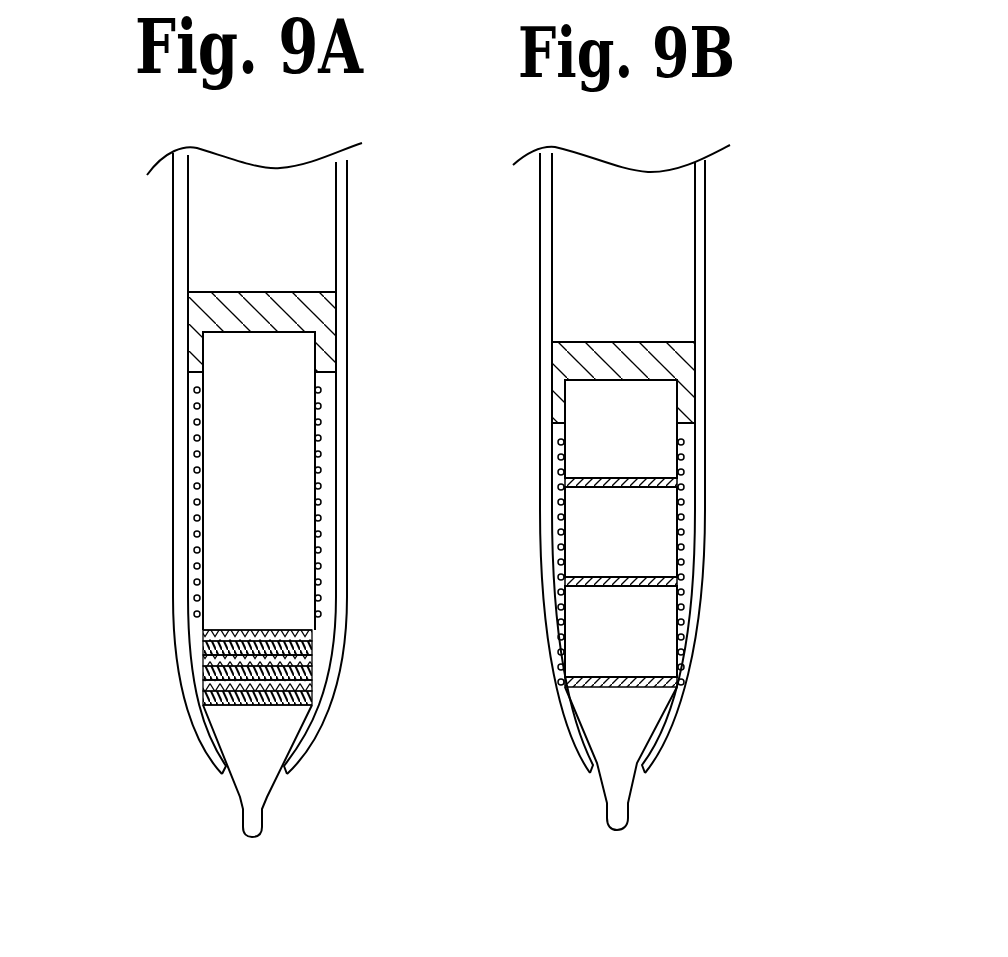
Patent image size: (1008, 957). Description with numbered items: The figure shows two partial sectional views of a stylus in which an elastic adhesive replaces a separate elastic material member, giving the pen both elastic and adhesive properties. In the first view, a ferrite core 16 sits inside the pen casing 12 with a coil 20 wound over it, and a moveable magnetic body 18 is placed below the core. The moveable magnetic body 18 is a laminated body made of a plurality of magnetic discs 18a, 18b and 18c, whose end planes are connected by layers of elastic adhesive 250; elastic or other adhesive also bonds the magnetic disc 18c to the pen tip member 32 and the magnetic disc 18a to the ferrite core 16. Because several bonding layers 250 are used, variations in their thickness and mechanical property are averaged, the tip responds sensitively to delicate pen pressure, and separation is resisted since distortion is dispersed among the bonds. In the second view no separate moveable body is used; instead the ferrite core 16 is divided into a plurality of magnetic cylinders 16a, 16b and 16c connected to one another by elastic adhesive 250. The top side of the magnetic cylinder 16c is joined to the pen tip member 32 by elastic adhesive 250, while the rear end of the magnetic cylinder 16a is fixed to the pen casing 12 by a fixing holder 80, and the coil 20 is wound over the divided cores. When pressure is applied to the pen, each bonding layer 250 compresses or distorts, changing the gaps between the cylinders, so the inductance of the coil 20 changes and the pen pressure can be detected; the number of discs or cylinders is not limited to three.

In FIG. 9A, the pen casing 12 is at (343, 233).
In FIG. 9B, the pen casing 12 is at (707, 222).
In FIG. 9A, the fixing holder 80 is at (312, 313).
In FIG. 9B, the fixing holder 80 is at (680, 360).
In FIG. 9A, the coil 20 is at (319, 418).
In FIG. 9B, the coil 20 is at (563, 442).
In FIG. 9A, the ferrite core 16 is at (275, 488).
In FIG. 9B, the ferrite core 16 is at (732, 528).
In FIG. 9B, the magnetic cylinder 16a is at (647, 443).
In FIG. 9B, the magnetic cylinder 16b is at (650, 537).
In FIG. 9B, the magnetic cylinder 16c is at (687, 631).
In FIG. 9A, the moveable magnetic body 18 is at (352, 673).
In FIG. 9A, the magnetic disc 18a is at (310, 643).
In FIG. 9A, the magnetic disc 18b is at (310, 662).
In FIG. 9A, the magnetic disc 18c is at (310, 688).
In FIG. 9A, the elastic adhesive 250 is at (203, 686).
In FIG. 9B, the elastic adhesive 250 is at (567, 683).
In FIG. 9A, the pen tip member 32 is at (265, 735).
In FIG. 9B, the pen tip member 32 is at (640, 725).